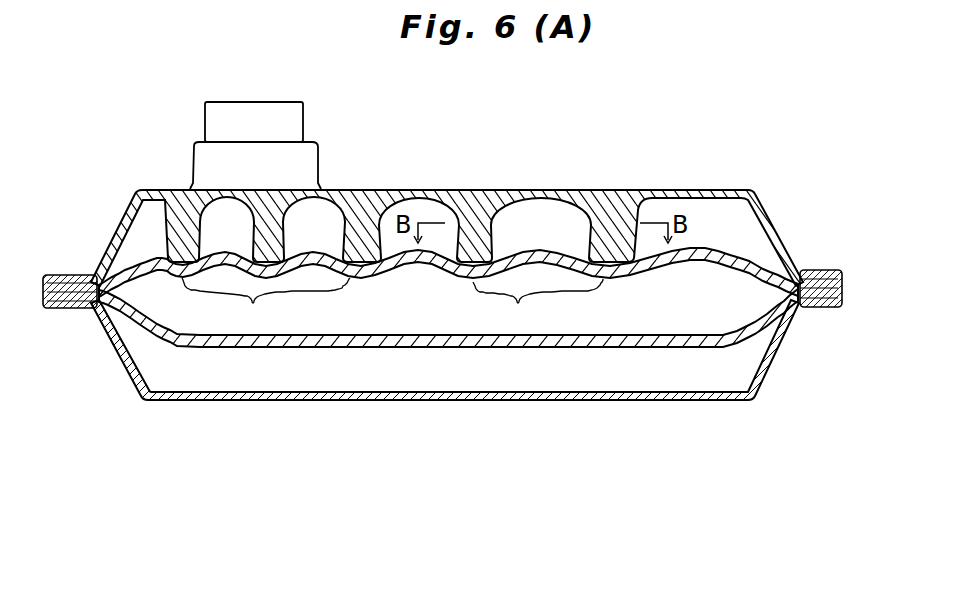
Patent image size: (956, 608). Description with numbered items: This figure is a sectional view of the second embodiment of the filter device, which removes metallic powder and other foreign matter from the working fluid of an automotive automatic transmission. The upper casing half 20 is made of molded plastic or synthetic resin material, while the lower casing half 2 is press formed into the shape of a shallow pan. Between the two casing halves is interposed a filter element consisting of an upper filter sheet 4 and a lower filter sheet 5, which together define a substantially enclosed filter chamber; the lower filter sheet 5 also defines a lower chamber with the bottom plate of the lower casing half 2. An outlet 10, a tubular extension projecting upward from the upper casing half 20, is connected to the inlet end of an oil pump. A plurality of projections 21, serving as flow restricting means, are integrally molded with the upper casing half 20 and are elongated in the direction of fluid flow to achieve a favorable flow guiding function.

The lower casing half 2 is at (637, 400).
The upper filter sheet 4 is at (737, 252).
The lower filter sheet 5 is at (757, 337).
The outlet 10 is at (305, 127).
The upper casing half 20 is at (641, 187).
The projections 21 is at (392, 307).